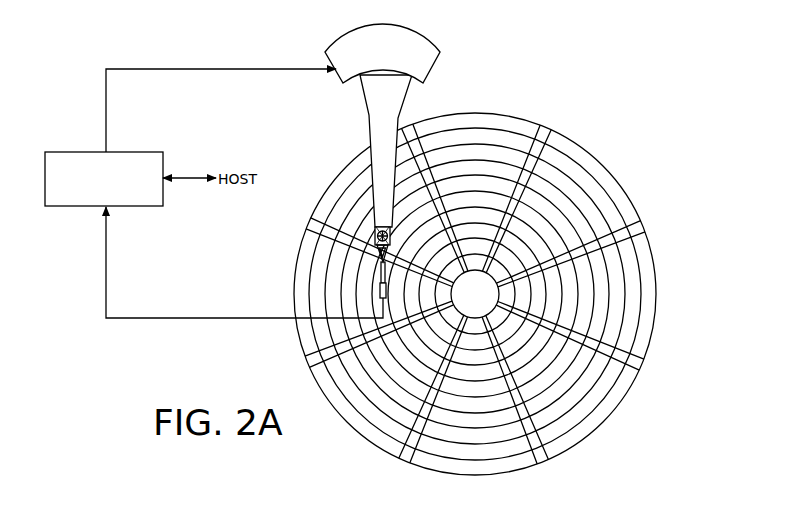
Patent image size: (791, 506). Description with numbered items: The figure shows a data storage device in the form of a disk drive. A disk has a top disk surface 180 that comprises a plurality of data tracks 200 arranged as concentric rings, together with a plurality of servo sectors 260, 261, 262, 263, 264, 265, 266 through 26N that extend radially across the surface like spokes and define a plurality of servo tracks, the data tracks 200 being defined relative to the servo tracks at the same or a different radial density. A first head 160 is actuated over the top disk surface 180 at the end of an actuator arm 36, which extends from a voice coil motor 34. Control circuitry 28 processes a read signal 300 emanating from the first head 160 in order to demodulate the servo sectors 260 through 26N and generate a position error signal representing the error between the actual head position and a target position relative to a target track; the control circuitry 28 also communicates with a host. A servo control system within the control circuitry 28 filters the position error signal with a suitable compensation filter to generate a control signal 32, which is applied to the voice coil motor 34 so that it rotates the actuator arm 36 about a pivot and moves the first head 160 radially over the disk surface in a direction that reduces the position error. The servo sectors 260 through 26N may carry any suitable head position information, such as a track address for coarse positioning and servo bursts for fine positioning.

The top disk surface 180 is at (475, 277).
The data tracks 200 is at (477, 140).
The servo sector 260 is at (547, 133).
The servo sector 261 is at (643, 228).
The servo sector 262 is at (640, 365).
The servo sector 263 is at (542, 460).
The servo sector 264 is at (407, 458).
The servo sector 265 is at (313, 362).
The servo sector 266 is at (313, 217).
The servo sector 26N is at (415, 133).
The first head 160 is at (377, 289).
The actuator arm 36 is at (368, 139).
The voice coil motor 34 is at (343, 83).
The control circuitry 28 is at (135, 152).
The control signal 32 is at (106, 99).
The read signal 300 is at (210, 318).